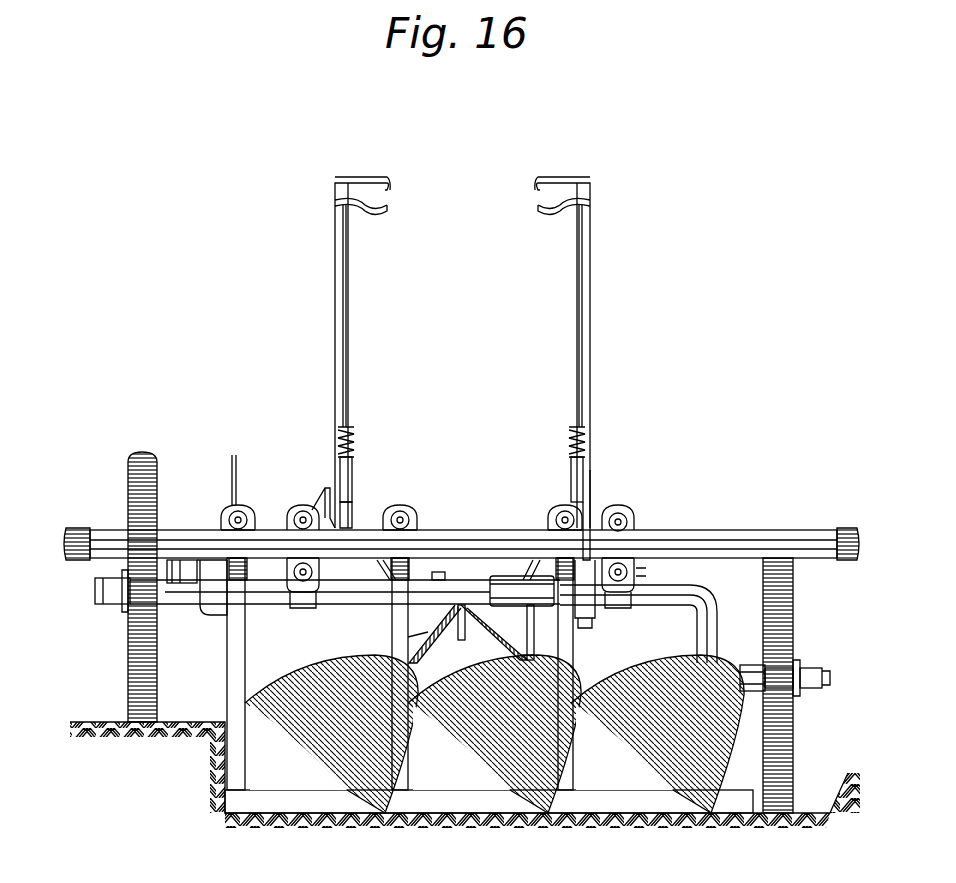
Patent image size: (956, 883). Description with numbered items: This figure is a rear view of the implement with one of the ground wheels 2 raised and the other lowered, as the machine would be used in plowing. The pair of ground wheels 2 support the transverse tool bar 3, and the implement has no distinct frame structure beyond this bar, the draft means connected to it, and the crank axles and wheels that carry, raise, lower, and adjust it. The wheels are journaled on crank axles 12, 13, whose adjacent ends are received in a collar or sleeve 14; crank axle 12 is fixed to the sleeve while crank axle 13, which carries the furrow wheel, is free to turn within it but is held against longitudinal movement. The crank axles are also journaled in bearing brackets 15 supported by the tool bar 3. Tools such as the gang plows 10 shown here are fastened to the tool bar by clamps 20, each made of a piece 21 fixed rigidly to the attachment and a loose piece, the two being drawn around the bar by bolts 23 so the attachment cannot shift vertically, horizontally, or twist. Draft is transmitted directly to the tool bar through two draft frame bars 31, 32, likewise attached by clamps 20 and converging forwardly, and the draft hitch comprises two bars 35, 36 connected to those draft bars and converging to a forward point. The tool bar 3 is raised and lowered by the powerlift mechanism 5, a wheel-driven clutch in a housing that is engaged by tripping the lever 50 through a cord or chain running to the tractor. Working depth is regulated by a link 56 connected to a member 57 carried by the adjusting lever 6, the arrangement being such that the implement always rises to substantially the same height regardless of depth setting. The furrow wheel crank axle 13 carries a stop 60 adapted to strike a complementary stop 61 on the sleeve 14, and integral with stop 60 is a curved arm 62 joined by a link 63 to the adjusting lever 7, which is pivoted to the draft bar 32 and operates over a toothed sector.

The ground wheels 2 is at (148, 474).
The tool bar 3 is at (470, 540).
The powerlift mechanism 5 is at (214, 598).
The adjusting lever 6 is at (335, 308).
The adjusting lever 7 is at (590, 312).
The plows 10 is at (494, 734).
The crank axle 12 is at (376, 592).
The crank axle 13 is at (678, 598).
The sleeve 14 is at (490, 628).
The bearing brackets 15 is at (302, 606).
The clamps 20 is at (292, 530).
The clamp piece 21 is at (322, 530).
The bolts 23 is at (304, 512).
The draft frame bar 31 is at (398, 612).
The draft frame bar 32 is at (522, 630).
The hitch bar 35 is at (410, 637).
The hitch bar 36 is at (520, 650).
The lever 50 is at (238, 482).
The link 56 is at (326, 492).
The member 57 is at (340, 498).
The stop 60 is at (582, 614).
The stop 61 is at (580, 628).
The curved arm 62 is at (636, 573).
The link 63 is at (586, 524).